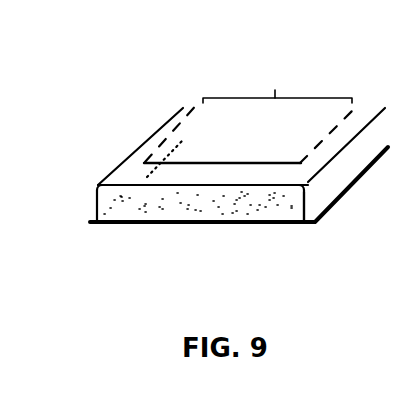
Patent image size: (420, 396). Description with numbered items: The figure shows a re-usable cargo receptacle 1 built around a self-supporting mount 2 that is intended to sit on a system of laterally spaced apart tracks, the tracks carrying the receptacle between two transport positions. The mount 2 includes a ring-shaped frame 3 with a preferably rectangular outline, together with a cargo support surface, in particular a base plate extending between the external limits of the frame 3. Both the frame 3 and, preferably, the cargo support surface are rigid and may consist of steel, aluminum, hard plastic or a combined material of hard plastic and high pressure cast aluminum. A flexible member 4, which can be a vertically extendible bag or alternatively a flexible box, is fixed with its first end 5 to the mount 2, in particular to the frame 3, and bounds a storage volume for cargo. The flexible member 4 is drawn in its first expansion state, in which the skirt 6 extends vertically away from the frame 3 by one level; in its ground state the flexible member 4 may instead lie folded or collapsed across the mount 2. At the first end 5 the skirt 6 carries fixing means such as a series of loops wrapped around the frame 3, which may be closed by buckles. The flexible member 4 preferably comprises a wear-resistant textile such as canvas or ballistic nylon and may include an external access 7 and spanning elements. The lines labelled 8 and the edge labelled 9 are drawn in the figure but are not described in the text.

The cargo receptacle 1 is at (105, 154).
The self-supporting mount 2 is at (99, 233).
The ring-shaped frame 3 is at (199, 232).
The flexible member 4 is at (86, 197).
The first end 5 is at (165, 209).
The skirt 6 is at (327, 194).
The external access 7 is at (277, 80).
The hidden edges 8 is at (181, 136).
The inner front edge 9 is at (271, 174).